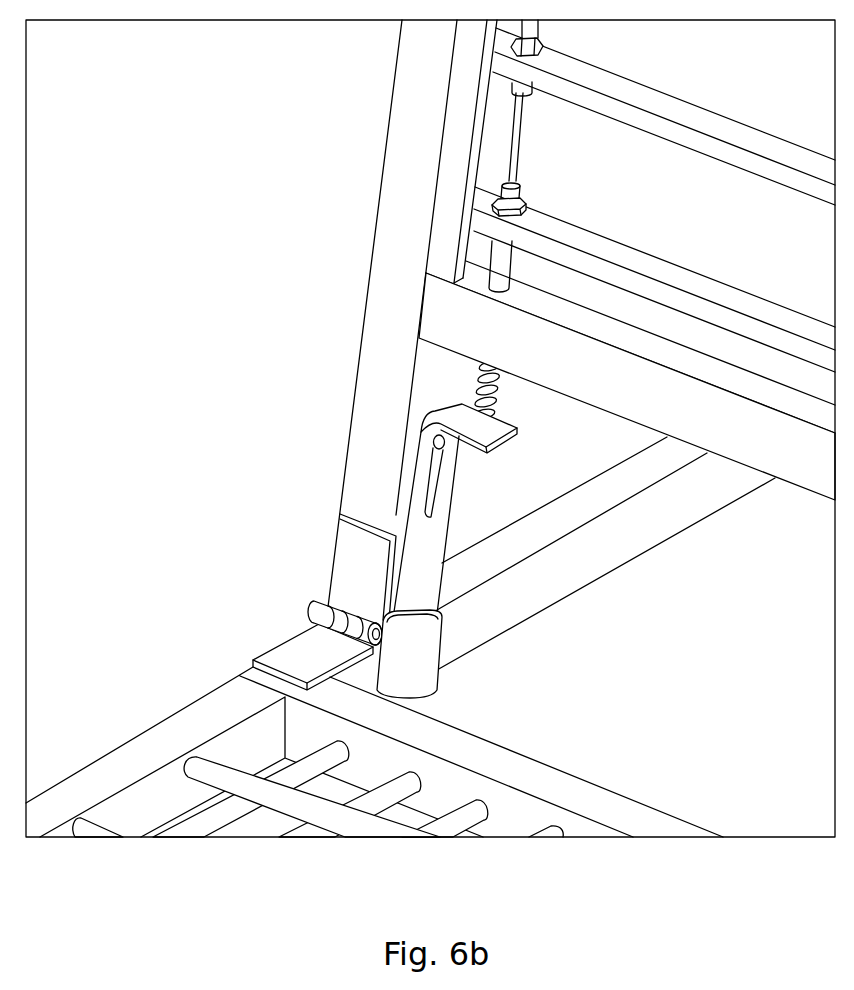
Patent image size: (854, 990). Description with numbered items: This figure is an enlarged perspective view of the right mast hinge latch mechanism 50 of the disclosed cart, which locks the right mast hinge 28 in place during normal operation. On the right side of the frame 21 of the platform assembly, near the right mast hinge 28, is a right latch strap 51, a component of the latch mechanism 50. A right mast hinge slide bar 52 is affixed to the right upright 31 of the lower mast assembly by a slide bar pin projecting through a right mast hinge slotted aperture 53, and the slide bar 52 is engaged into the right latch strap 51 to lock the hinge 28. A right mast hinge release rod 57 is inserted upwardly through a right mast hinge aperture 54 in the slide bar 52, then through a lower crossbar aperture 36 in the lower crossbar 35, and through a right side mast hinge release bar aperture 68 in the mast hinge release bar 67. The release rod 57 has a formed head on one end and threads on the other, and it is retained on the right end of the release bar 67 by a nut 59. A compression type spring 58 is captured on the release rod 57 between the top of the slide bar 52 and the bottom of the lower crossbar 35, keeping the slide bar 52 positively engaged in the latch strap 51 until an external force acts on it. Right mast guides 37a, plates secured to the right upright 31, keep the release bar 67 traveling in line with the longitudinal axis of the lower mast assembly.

The frame 21 is at (530, 600).
The right mast hinge 28 is at (308, 655).
The right upright 31 is at (392, 97).
The lower crossbar 35 is at (713, 430).
The lower crossbar aperture 36 is at (480, 286).
The right mast guides 37a is at (463, 144).
The right mast hinge latch mechanism 50 is at (406, 478).
The right latch strap 51 is at (428, 683).
The right mast hinge slide bar 52 is at (400, 546).
The right mast hinge slotted aperture 53 is at (391, 523).
The right mast hinge aperture 54 is at (490, 430).
The right mast hinge release rod 57 is at (500, 259).
The compression type spring 58 is at (502, 387).
The nut 59 is at (526, 208).
The mast hinge release bar 67 is at (748, 290).
The right side mast hinge release bar aperture 68 is at (490, 207).